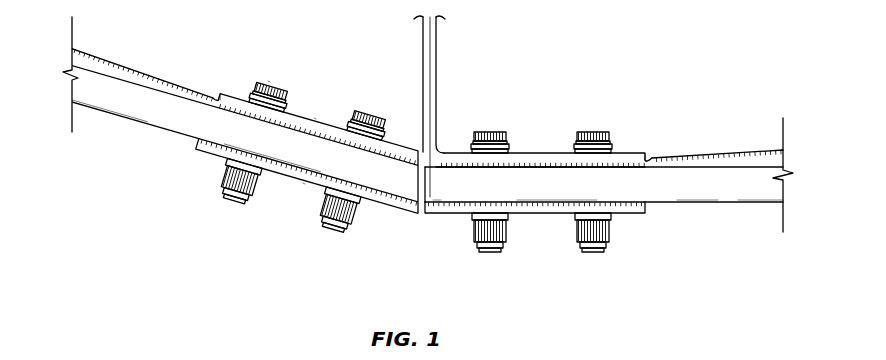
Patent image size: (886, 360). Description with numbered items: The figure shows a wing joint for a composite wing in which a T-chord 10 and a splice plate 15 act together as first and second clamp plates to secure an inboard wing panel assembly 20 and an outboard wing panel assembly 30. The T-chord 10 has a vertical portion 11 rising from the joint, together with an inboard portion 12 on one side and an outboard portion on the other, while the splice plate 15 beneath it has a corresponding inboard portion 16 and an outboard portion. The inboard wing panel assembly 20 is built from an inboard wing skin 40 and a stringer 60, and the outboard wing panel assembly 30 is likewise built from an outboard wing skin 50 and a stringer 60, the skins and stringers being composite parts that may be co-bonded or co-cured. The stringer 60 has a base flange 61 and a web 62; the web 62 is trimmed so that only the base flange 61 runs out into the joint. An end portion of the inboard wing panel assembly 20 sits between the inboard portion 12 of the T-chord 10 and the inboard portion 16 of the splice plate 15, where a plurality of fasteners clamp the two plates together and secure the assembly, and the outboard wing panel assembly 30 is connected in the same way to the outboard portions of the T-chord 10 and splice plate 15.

The T-chord 10 is at (382, 44).
The vertical portion 11 is at (437, 58).
The inboard portion 12 is at (533, 153).
The splice plate 15 is at (402, 235).
The inboard portion 16 is at (547, 214).
The inboard wing panel assembly 20 is at (753, 98).
The outboard wing panel assembly 30 is at (103, 160).
The inboard wing skin 40 is at (713, 203).
The outboard wing skin 50 is at (157, 140).
The stringer 60 is at (60, 53).
The base flange 61 is at (236, 101).
The web 62 is at (135, 62).